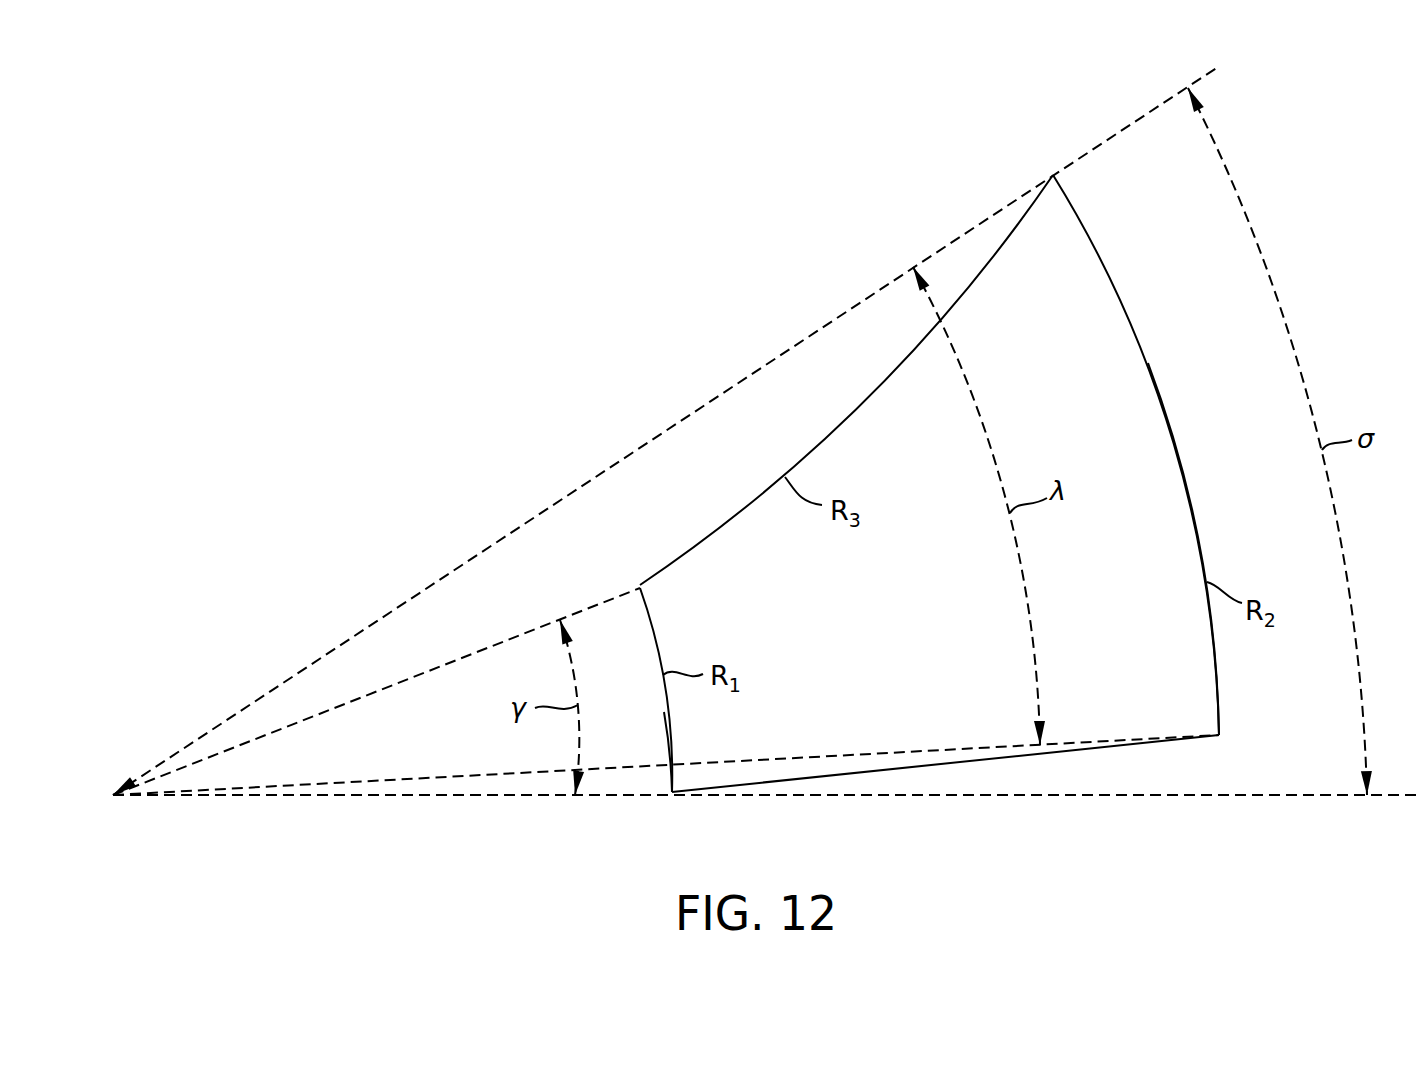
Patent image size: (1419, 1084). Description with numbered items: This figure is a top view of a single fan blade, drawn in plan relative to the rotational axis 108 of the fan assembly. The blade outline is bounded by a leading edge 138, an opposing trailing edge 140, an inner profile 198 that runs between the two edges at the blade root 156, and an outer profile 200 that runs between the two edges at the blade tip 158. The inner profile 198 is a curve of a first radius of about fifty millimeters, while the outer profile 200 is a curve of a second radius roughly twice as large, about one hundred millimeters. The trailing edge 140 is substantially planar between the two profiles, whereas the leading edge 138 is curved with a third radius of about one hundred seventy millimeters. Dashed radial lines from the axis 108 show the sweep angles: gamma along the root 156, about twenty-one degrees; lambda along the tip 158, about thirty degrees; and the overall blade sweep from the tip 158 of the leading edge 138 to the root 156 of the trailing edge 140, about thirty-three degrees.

The axis 108 is at (749, 814).
The leading edge 138 is at (718, 525).
The root 156 is at (655, 641).
The inner profile 198 is at (672, 750).
The trailing edge 140 is at (943, 765).
The tip 158 is at (1102, 257).
The outer profile 200 is at (1148, 363).